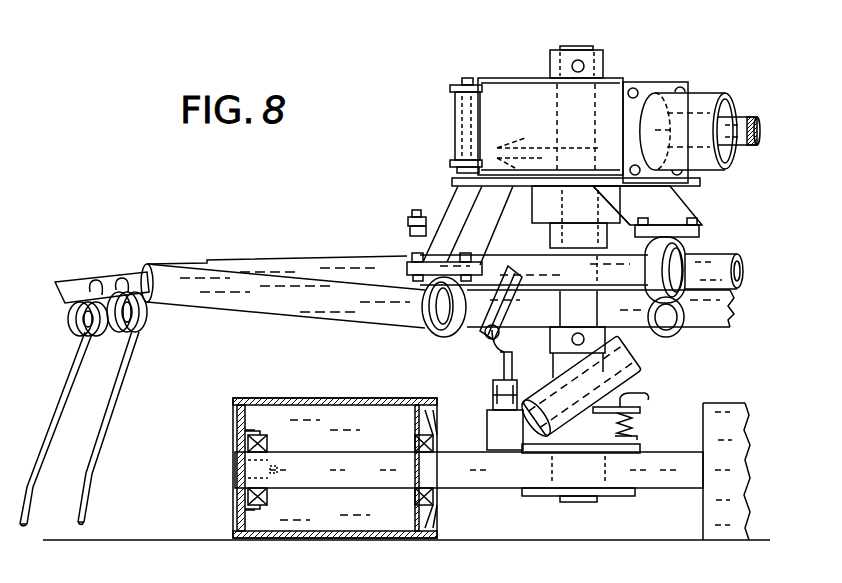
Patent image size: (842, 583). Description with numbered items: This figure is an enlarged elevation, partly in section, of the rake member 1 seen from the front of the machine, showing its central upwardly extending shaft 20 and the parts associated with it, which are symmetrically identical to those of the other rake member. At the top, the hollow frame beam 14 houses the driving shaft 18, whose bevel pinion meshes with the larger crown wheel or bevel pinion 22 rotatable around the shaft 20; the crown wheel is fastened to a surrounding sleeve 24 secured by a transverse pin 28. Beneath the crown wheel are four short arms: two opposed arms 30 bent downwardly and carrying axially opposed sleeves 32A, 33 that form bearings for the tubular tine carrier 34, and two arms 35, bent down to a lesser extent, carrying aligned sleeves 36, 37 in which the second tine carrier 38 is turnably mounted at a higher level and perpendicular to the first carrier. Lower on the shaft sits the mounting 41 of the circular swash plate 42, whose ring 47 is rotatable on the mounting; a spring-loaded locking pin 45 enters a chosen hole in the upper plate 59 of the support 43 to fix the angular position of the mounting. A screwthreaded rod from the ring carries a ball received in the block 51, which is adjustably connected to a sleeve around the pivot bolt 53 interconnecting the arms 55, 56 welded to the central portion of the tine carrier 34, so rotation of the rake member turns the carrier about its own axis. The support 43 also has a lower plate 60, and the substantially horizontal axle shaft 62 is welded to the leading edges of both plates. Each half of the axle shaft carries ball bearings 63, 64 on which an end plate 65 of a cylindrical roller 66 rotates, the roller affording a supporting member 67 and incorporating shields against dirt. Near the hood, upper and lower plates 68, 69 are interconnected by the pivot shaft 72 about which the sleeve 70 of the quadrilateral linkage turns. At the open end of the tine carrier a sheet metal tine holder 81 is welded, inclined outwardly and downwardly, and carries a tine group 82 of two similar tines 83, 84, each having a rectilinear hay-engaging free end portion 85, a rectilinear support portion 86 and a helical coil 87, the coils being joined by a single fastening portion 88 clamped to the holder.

The rake member 1 is at (233, 250).
The hollow frame beam 14 is at (716, 92).
The driving shaft 18 is at (751, 114).
The upwardly extending shaft 20 is at (579, 46).
The crown wheel or bevel pinion 22 is at (525, 146).
The sleeve 24 is at (536, 202).
The pin 28 is at (336, 257).
The arm 30 is at (452, 200).
The sleeve 32A is at (432, 338).
The sleeve 33 is at (703, 336).
The tine carrier 34 is at (244, 306).
The arm 35 is at (428, 216).
The sleeve 36 is at (646, 264).
The sleeve 37 is at (408, 236).
The second tine carrier 38 is at (732, 255).
The mounting 41 is at (580, 410).
The swash plate 42 is at (650, 378).
The support 43 is at (541, 504).
The locking pin 45 is at (640, 398).
The ring 47 is at (632, 345).
The block 51 is at (489, 424).
The pivot bolt 53 is at (487, 340).
The arm 55 is at (545, 284).
The arm 56 is at (510, 264).
The upper plate 59 is at (640, 450).
The lower plate 60 is at (622, 497).
The axle shaft 62 is at (507, 478).
The ball bearing 63 is at (262, 452).
The ball bearing 64 is at (424, 449).
The end plate 65 is at (237, 418).
The cylindrical roller 66 is at (347, 400).
The supporting member 67 is at (268, 388).
The upper plate 68 is at (454, 86).
The lower plate 69 is at (452, 165).
The sleeve 70 is at (457, 114).
The pivot shaft 72 is at (470, 77).
The tine holder 81 is at (70, 283).
The tine group 82 is at (126, 413).
The tine 83 is at (38, 442).
The tine 84 is at (104, 457).
The free end portion 85 is at (78, 510).
The support portion 86 is at (65, 395).
The helical coil 87 is at (67, 314).
The fastening portion 88 is at (118, 280).